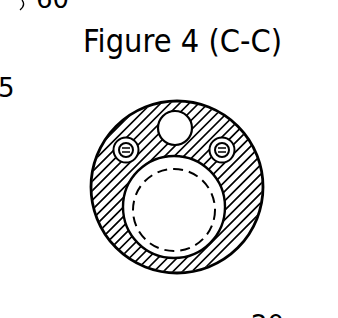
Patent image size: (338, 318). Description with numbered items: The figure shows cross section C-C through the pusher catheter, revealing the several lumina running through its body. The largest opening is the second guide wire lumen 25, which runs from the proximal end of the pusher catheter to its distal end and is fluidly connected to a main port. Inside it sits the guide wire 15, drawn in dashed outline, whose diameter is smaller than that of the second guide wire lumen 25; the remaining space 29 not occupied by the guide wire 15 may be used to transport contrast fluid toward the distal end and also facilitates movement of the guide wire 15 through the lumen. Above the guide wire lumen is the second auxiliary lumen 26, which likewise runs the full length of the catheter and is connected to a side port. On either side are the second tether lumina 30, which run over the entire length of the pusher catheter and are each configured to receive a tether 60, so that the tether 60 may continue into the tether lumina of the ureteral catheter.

The guide wire 15 is at (182, 216).
The second guide wire lumen 25 is at (101, 223).
The second auxiliary lumen 26 is at (152, 102).
The space 29 is at (137, 267).
The second tether lumina 30 is at (114, 149).
The tether 60 is at (92, 185).